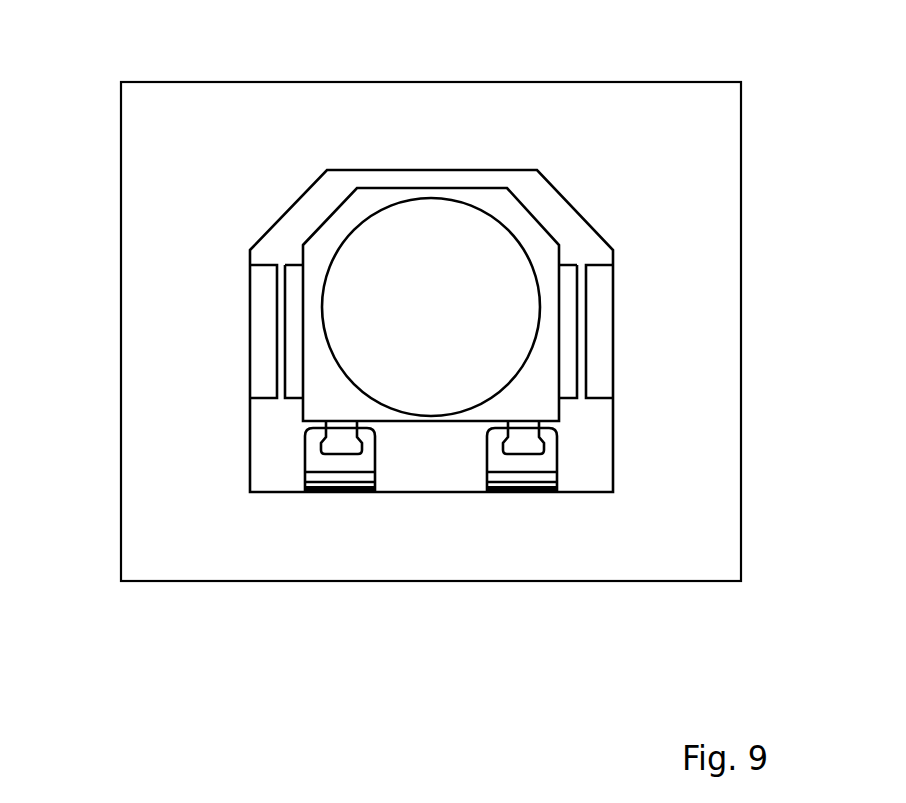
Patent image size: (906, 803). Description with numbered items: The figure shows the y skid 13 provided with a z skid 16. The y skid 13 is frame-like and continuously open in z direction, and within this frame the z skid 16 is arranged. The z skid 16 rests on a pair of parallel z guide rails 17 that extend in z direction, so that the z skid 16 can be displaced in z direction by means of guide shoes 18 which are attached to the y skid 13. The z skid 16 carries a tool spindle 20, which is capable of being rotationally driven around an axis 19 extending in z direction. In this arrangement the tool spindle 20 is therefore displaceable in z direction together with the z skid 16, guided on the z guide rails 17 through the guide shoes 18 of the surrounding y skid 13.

The y skid 13 is at (745, 372).
The z skid 16 is at (460, 178).
The z guide rails 17 is at (324, 427).
The guide shoes 18 is at (327, 462).
The axis 19 is at (425, 292).
The tool spindle 20 is at (485, 245).